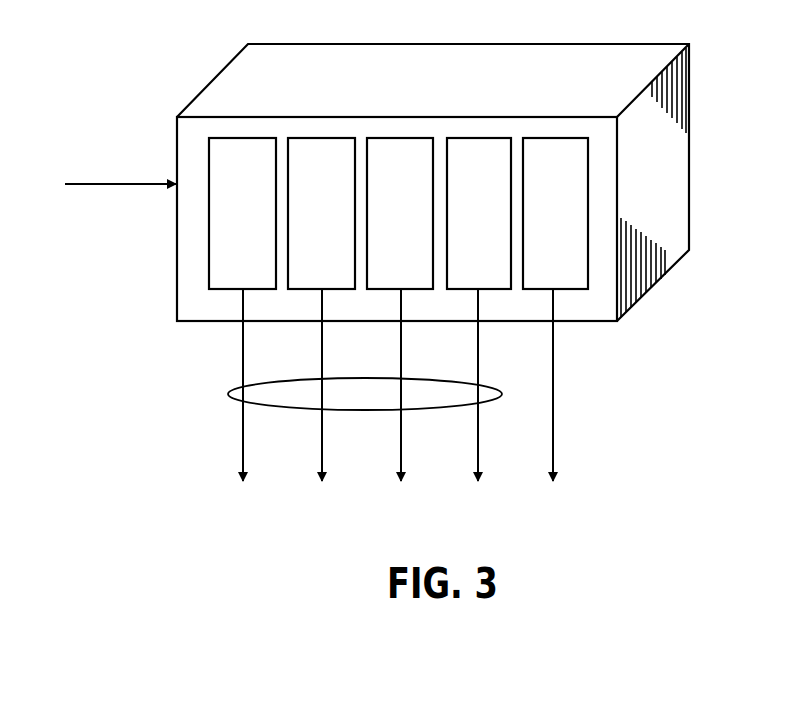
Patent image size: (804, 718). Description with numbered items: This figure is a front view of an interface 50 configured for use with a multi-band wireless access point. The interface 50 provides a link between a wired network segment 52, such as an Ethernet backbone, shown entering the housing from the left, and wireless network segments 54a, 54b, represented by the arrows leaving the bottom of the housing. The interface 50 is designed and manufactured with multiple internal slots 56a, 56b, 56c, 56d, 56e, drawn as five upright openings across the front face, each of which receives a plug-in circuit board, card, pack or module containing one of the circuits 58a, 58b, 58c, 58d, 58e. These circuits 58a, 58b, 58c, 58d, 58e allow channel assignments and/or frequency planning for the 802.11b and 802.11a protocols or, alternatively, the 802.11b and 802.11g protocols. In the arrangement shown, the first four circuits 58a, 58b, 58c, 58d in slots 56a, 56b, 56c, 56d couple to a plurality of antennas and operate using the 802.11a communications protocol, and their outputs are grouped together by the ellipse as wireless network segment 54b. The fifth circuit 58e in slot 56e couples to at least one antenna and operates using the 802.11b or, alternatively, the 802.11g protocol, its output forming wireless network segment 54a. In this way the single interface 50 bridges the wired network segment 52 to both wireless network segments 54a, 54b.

The interface 50 is at (195, 323).
The wired network segment 52 is at (112, 185).
The wireless network segment 54a is at (553, 428).
The wireless network segment 54b is at (232, 393).
The internal slot 56a is at (241, 126).
The internal slot 56b is at (324, 126).
The internal slot 56c is at (399, 126).
The internal slot 56d is at (476, 126).
The internal slot 56e is at (553, 126).
The circuit 58a is at (258, 267).
The circuit 58b is at (335, 267).
The circuit 58c is at (413, 267).
The circuit 58d is at (487, 267).
The circuit 58e is at (570, 267).